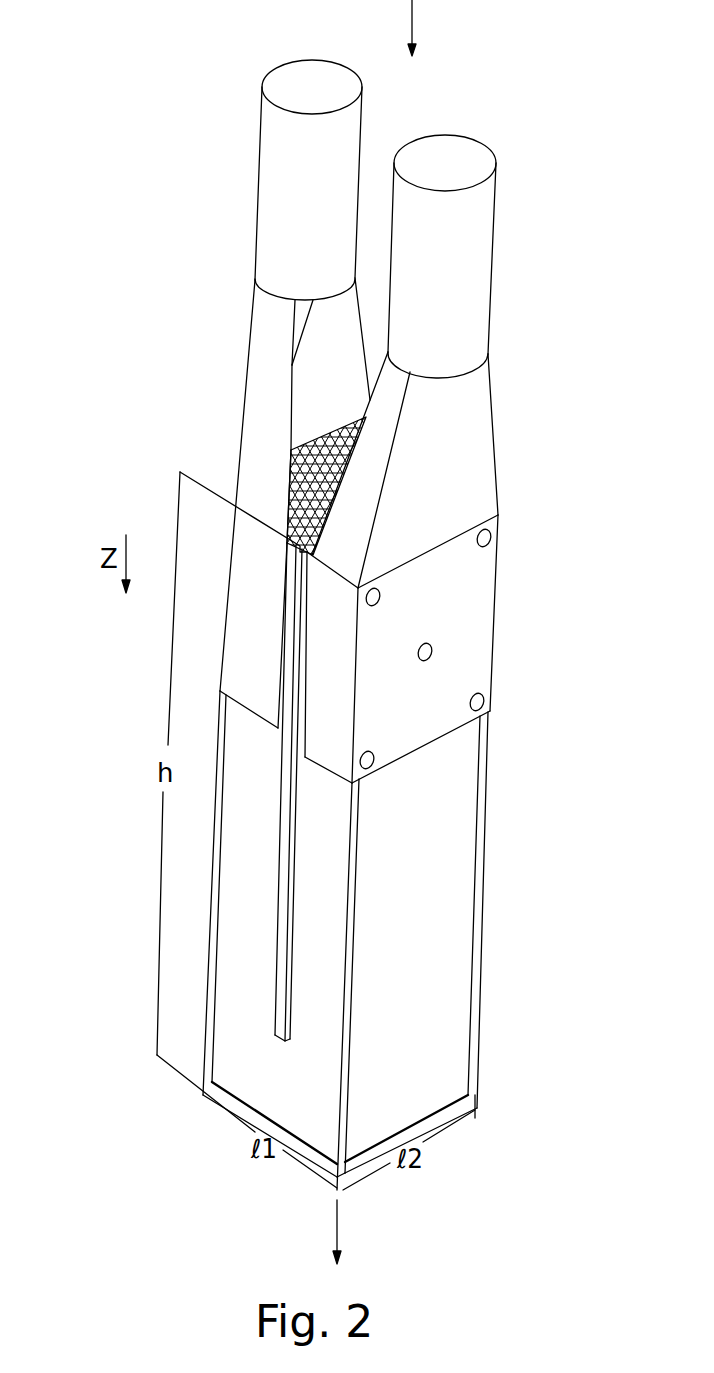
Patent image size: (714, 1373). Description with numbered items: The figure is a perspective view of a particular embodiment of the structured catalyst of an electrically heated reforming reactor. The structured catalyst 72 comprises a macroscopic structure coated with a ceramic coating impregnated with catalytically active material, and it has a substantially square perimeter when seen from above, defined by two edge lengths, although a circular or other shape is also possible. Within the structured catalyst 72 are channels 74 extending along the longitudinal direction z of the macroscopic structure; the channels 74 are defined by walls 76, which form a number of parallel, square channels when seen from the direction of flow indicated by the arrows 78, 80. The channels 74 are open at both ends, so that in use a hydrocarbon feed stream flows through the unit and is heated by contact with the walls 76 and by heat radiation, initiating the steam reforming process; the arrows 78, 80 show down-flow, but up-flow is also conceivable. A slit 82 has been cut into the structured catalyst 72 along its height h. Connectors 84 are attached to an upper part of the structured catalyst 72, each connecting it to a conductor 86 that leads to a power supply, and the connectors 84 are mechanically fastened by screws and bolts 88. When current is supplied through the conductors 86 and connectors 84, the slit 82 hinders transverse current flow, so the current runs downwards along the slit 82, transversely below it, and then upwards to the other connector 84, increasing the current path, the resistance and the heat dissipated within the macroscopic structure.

The structured catalyst 72 is at (482, 968).
The channels 74 is at (293, 450).
The walls 76 is at (320, 435).
The arrow 78 is at (429, 28).
The arrow 80 is at (353, 1232).
The slit 82 is at (276, 990).
The connectors 84 is at (232, 464).
The conductors 86 is at (282, 187).
The screws and bolts 88 is at (493, 533).